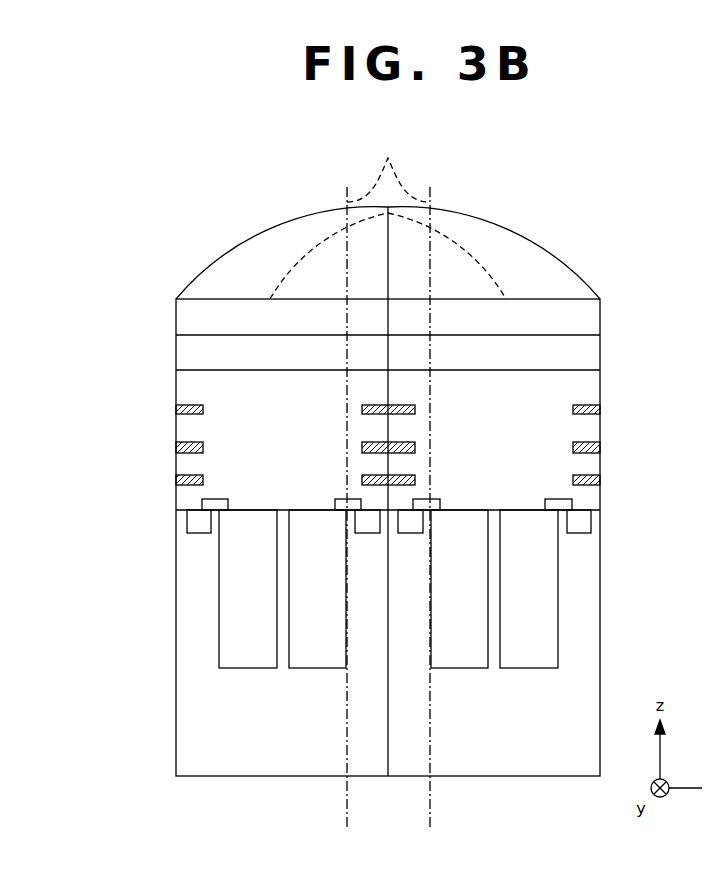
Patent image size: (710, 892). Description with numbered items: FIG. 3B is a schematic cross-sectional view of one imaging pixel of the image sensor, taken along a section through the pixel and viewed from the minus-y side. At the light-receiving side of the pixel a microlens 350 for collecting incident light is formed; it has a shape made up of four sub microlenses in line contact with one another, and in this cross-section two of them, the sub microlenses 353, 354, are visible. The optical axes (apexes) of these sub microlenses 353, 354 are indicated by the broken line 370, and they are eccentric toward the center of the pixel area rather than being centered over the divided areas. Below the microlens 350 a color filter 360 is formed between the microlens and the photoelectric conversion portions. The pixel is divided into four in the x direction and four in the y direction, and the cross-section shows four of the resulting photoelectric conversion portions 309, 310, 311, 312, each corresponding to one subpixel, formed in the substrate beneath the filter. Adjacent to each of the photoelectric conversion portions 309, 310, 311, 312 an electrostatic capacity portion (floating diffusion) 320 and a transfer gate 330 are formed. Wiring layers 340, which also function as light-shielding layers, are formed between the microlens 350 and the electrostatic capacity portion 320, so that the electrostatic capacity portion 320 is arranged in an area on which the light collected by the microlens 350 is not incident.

The photoelectric conversion portion 309 is at (248, 652).
The photoelectric conversion portion 310 is at (318, 652).
The photoelectric conversion portion 311 is at (460, 652).
The photoelectric conversion portion 312 is at (530, 652).
The electrostatic capacity portion (floating diffusion) 320 is at (585, 520).
The transfer gate 330 is at (571, 506).
The wiring layer 340 is at (177, 477).
The microlens 350 is at (540, 257).
The sub microlens 353 is at (262, 232).
The sub microlens 354 is at (514, 232).
The color filter 360 is at (593, 348).
The broken line 370 is at (388, 168).